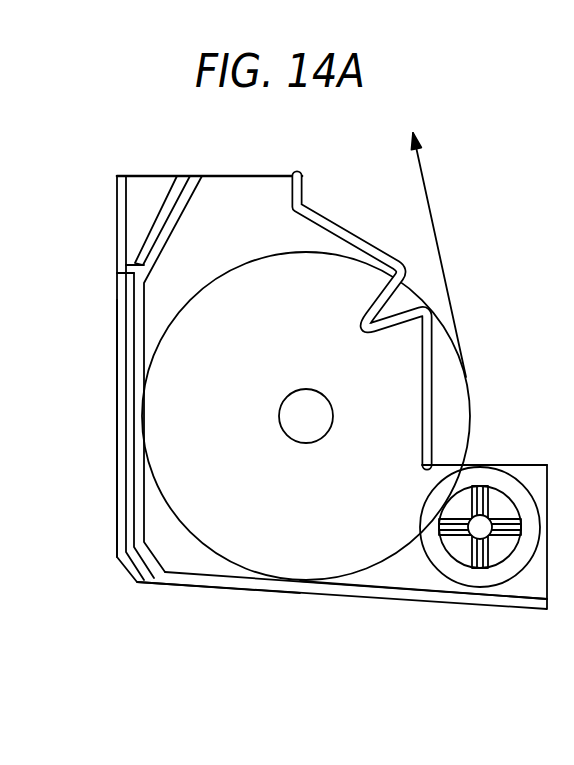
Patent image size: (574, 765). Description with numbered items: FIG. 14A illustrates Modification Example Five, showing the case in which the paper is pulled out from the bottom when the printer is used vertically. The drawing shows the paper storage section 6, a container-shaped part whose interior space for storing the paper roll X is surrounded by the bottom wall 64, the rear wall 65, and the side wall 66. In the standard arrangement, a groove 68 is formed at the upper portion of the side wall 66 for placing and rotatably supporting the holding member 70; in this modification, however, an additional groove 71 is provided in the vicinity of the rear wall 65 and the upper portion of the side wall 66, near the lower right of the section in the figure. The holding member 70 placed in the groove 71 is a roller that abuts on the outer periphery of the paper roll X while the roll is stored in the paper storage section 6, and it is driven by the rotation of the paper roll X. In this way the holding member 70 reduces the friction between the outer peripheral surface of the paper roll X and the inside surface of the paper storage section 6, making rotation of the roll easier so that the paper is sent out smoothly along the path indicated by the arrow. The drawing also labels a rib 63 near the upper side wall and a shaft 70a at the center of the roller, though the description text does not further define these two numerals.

The paper storage section 6 is at (284, 156).
The engagement rib 63 is at (196, 196).
The paper roll X is at (352, 253).
The groove 68 is at (417, 286).
The groove 71 is at (488, 465).
The bottom wall 64 is at (148, 508).
The side wall 66 is at (190, 553).
The rear wall 65 is at (378, 572).
The holding member 70 is at (452, 568).
The platen roller shaft 70a is at (482, 535).